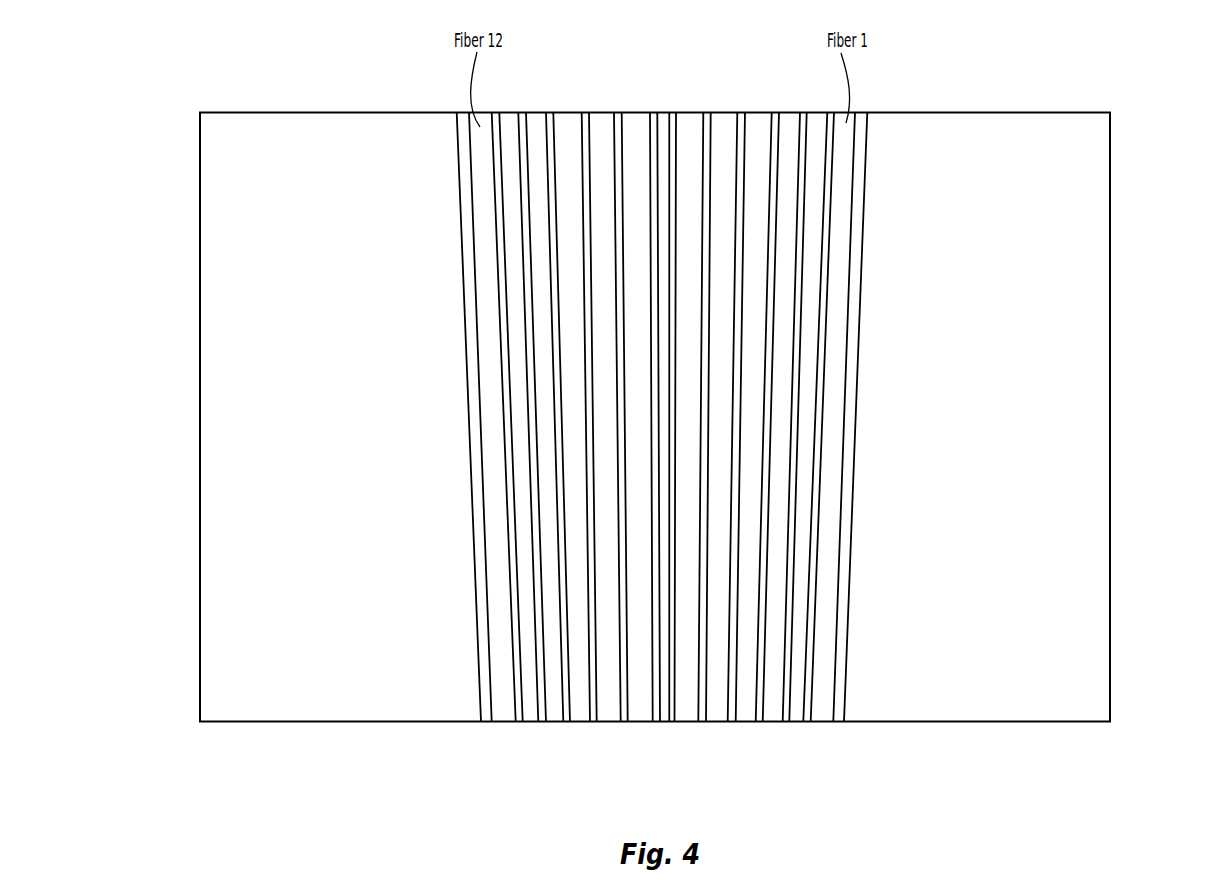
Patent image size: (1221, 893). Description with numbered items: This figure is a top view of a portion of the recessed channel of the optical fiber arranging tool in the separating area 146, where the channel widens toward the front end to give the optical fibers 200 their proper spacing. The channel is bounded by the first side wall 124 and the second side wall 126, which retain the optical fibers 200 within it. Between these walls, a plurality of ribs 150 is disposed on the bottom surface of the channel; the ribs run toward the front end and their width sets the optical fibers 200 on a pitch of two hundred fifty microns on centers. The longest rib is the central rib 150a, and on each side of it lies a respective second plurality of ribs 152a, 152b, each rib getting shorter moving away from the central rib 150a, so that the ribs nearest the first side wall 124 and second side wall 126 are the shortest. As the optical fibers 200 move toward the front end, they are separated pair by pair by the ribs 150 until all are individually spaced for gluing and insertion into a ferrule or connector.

The separating area 146 is at (1062, 348).
The second side wall 126 is at (473, 544).
The first side wall 124 is at (852, 533).
The plurality of ribs 150 is at (817, 452).
The central rib 150a is at (662, 125).
The second plurality of ribs 152b is at (566, 712).
The second plurality of ribs 152a is at (700, 712).
The optical fibers 200 is at (789, 712).